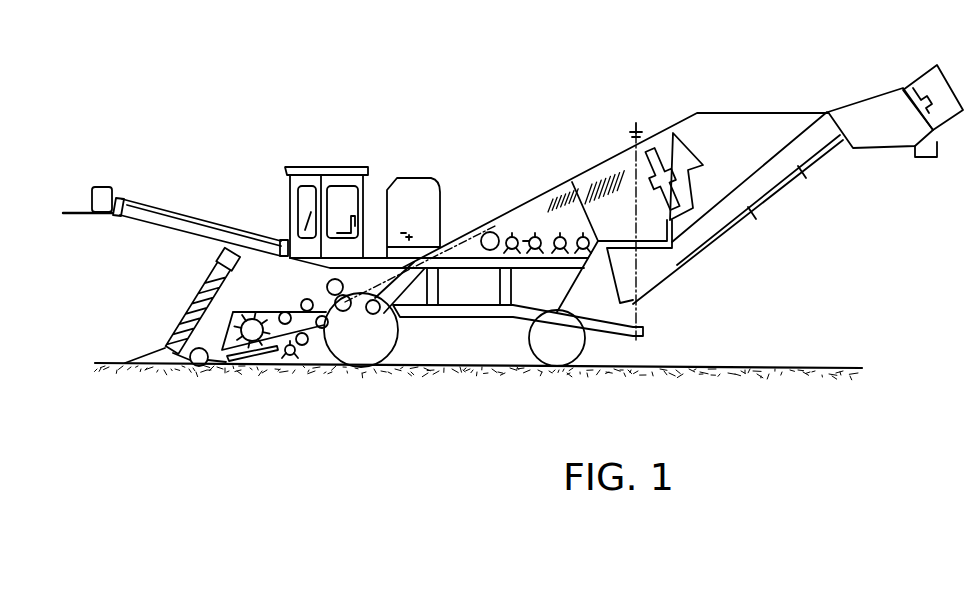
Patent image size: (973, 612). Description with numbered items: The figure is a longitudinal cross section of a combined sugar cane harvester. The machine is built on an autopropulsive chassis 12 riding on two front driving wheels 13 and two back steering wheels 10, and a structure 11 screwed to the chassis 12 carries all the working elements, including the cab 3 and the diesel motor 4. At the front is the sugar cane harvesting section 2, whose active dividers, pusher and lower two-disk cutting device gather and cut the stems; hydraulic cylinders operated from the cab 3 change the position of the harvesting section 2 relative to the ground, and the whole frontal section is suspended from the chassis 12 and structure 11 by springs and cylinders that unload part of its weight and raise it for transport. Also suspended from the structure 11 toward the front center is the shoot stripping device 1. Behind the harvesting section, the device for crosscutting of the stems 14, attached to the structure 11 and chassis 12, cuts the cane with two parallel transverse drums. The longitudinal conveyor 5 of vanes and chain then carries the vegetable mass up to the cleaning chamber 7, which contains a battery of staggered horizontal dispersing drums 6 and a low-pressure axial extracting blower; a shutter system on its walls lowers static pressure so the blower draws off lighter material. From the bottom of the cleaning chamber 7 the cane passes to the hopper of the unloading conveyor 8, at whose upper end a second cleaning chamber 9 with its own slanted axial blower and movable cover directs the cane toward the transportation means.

The shoot stripping device 1 is at (207, 235).
The sugar cane harvesting section 2 is at (270, 315).
The cab 3 is at (333, 178).
The diesel motor 4 is at (420, 192).
The longitudinal conveyor 5 is at (462, 250).
The dispersing drums 6 is at (539, 237).
The cleaning chamber 7 is at (663, 150).
The unloading conveyor 8 is at (750, 190).
The cleaning chamber 9 is at (887, 112).
The back steering wheels 10 is at (577, 345).
The structure 11 is at (507, 297).
The autopropulsive chassis 12 is at (443, 313).
The front driving wheels 13 is at (390, 340).
The device for crosscutting of the stems 14 is at (343, 303).